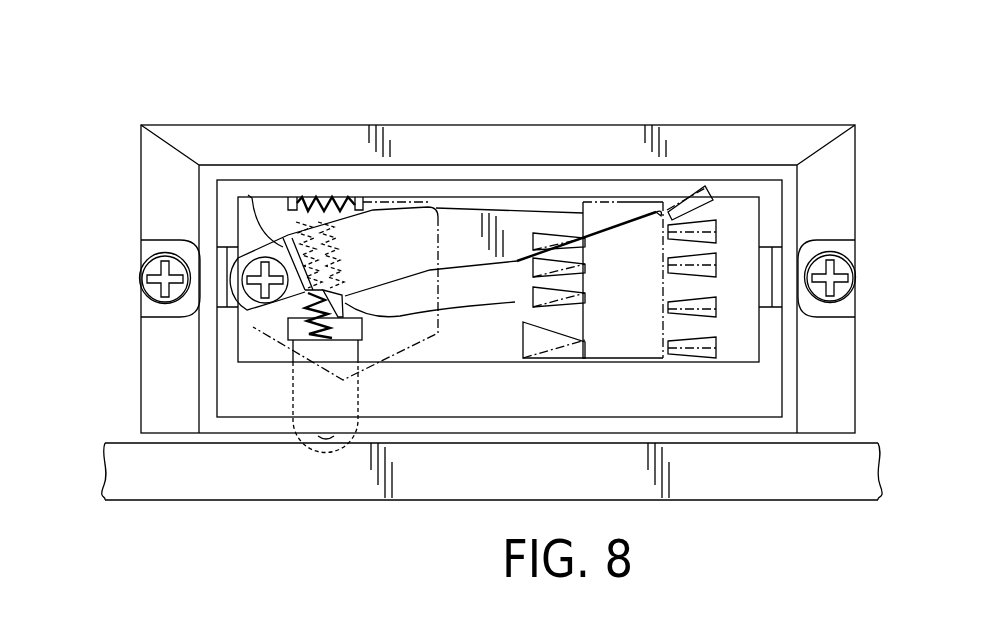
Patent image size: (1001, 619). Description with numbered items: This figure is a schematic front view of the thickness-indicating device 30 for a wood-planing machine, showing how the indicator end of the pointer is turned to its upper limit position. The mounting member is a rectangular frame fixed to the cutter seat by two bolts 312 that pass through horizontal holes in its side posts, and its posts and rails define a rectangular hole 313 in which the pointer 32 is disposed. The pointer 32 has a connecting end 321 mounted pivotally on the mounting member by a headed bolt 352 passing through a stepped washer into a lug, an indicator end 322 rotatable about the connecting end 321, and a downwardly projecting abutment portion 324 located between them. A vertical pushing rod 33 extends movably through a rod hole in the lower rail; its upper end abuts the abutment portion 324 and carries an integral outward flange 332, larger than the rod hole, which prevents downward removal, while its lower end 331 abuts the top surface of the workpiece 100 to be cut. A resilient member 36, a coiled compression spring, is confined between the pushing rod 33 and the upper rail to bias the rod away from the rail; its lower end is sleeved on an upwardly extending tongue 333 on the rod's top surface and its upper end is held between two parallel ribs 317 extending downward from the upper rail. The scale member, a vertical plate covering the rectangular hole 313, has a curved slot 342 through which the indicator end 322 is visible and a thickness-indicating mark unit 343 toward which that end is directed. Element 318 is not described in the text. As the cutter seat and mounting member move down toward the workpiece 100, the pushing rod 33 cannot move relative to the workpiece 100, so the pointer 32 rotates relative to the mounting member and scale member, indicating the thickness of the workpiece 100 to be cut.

The thickness-indicating device 30 is at (760, 102).
The bolts 312 is at (152, 262).
The rectangular hole 313 is at (508, 199).
The parallel ribs 317 is at (296, 197).
The resilient member 36 is at (338, 198).
The connecting end 321 is at (283, 238).
The headed bolt 352 is at (252, 198).
The pointer 32 is at (537, 220).
The indicator end 322 is at (630, 210).
The abutment portion 324 is at (440, 299).
The curved slot 342 is at (663, 202).
The thickness-indicating mark unit 343 is at (697, 187).
The side block 318 is at (769, 210).
The tongue 333 is at (240, 312).
The outward flange 332 is at (300, 296).
The vertical pushing rod 33 is at (293, 387).
The lower end 331 is at (326, 437).
The base 100 is at (770, 478).